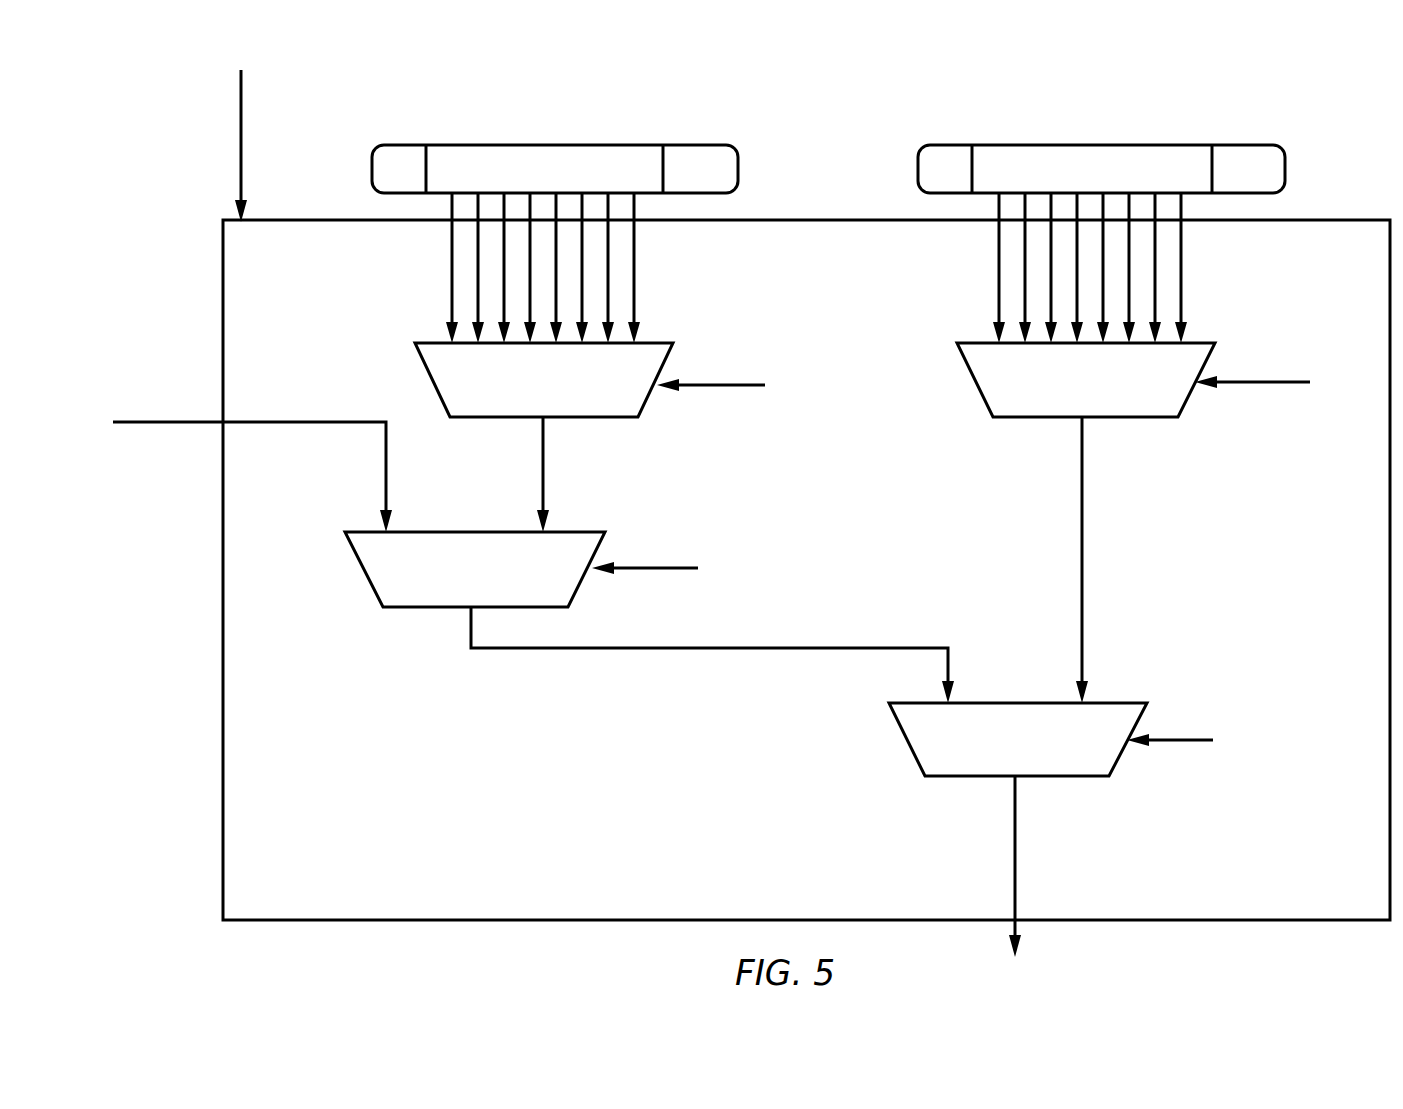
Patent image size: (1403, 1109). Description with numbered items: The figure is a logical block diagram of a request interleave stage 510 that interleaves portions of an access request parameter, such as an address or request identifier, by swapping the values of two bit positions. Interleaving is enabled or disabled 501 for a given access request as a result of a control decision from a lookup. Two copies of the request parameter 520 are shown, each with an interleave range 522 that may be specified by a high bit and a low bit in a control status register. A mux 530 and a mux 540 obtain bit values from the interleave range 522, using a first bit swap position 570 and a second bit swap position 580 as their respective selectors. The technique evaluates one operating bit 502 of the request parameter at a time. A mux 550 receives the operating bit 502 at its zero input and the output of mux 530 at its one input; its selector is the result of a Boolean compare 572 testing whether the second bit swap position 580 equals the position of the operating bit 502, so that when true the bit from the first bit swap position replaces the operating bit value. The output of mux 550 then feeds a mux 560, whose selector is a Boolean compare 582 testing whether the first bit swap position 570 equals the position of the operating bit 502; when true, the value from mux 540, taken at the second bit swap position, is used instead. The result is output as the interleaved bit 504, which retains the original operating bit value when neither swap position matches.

The interleave enabled/disabled 501 is at (238, 100).
The operating bit 502 is at (141, 422).
The interleaved bit 504 is at (1015, 875).
The request interleave stage 510 is at (806, 570).
The request parameter 520 is at (918, 169).
The interleave range 522 is at (816, 250).
The mux 530 is at (544, 437).
The mux 540 is at (1086, 523).
The mux 550 is at (649, 617).
The mux 560 is at (1018, 739).
The first bit swap position 570 is at (718, 385).
The Boolean compare 572 is at (757, 587).
The second bit swap position 580 is at (1262, 382).
The Boolean compare 582 is at (1254, 769).